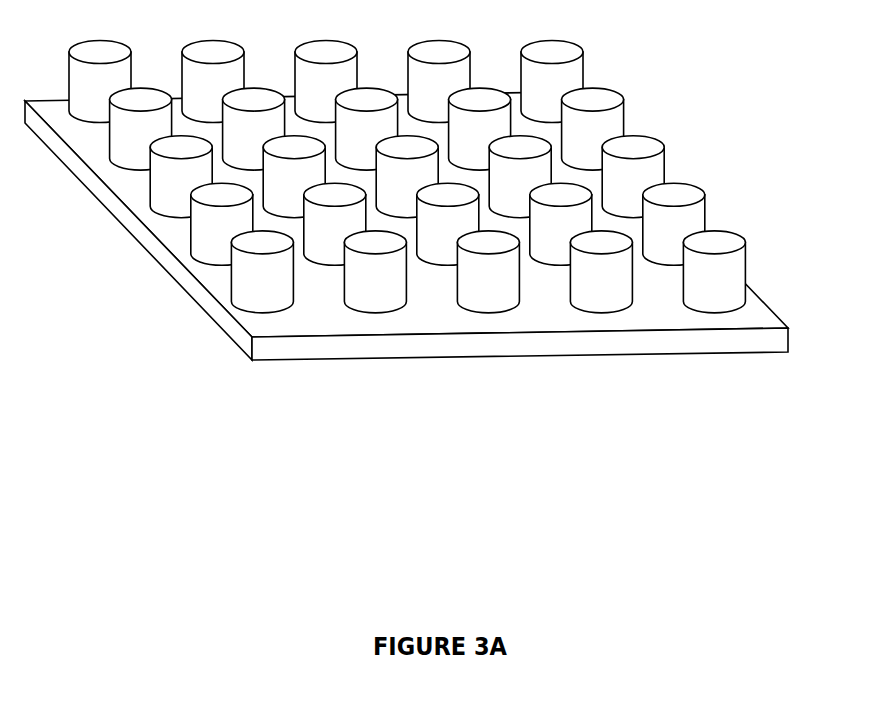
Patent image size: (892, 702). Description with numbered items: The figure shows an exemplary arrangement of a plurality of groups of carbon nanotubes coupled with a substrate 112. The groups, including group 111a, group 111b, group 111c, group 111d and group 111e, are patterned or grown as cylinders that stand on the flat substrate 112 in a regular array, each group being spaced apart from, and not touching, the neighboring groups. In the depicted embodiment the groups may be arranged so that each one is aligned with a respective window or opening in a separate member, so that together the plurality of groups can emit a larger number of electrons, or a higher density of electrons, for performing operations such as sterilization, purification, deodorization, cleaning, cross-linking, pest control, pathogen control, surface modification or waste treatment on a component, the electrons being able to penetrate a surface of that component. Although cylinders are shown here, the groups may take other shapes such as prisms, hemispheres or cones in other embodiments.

The group of carbon nanotubes 111a is at (263, 298).
The group of carbon nanotubes 111b is at (376, 298).
The group of carbon nanotubes 111c is at (489, 296).
The group of carbon nanotubes 111d is at (602, 294).
The group of carbon nanotubes 111e is at (722, 293).
The substrate 112 is at (283, 350).